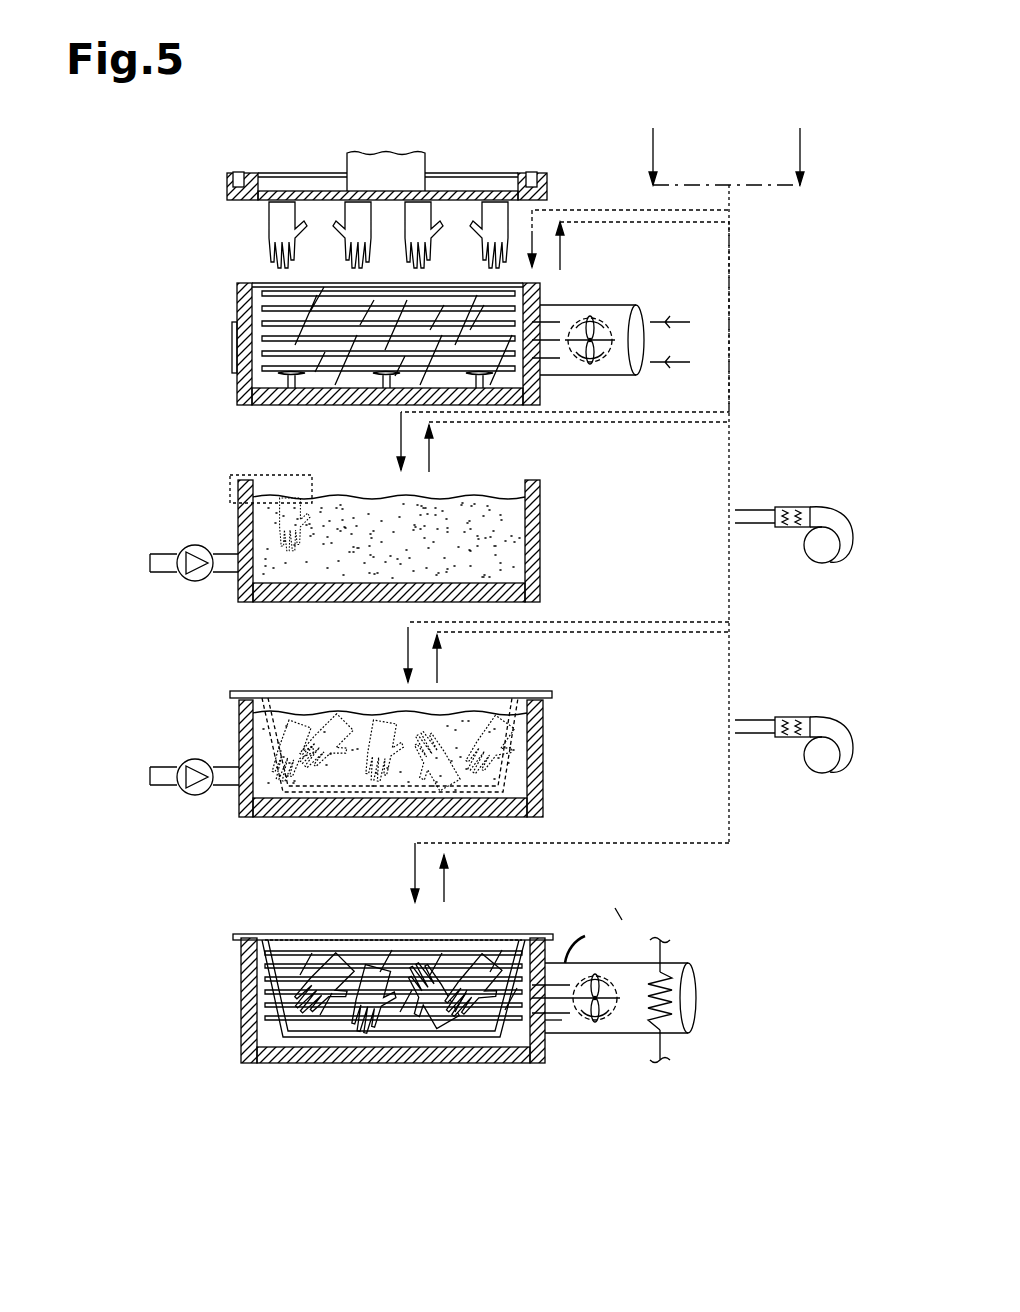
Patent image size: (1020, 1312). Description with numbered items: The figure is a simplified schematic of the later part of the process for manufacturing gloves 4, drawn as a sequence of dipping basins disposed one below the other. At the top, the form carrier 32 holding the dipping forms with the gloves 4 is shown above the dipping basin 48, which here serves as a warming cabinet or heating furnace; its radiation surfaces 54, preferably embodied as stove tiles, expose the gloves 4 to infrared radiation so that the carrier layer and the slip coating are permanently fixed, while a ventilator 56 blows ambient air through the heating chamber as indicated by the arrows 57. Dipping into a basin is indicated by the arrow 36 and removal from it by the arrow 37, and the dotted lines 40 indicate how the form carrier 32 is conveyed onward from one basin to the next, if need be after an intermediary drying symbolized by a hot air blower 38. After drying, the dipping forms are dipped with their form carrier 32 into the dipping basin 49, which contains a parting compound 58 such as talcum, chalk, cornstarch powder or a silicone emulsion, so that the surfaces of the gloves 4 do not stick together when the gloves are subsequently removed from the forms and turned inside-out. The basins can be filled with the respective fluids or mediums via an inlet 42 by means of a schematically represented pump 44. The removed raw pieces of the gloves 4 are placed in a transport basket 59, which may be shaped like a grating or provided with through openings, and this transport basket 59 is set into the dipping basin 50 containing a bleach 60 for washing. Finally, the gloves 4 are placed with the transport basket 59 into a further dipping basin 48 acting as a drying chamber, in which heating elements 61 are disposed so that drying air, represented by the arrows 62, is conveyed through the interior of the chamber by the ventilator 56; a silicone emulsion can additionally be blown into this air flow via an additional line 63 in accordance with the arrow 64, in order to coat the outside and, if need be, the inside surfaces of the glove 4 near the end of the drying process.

The gloves 4 is at (287, 217).
The form carrier 32 is at (545, 140).
The arrow 36 is at (540, 238).
The arrow 37 is at (568, 266).
The hot air blower 38 is at (815, 515).
The dotted lines 40 is at (733, 272).
The inlet 42 is at (230, 562).
The pump 44 is at (178, 548).
The dipping basin 48 is at (196, 272).
The dipping basin 49 is at (206, 490).
The dipping basin 50 is at (211, 710).
The radiation surfaces 54 is at (258, 307).
The ventilator 56 is at (598, 360).
The arrows 57 is at (672, 322).
The parting compound 58 is at (475, 540).
The transport basket 59 is at (262, 710).
The bleach 60 is at (515, 735).
The heating elements 61 is at (662, 998).
The arrows 62 is at (566, 1030).
The additional line 63 is at (578, 938).
The arrow 64 is at (630, 916).